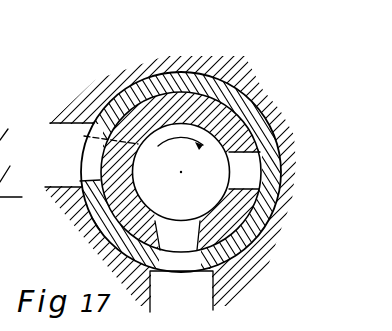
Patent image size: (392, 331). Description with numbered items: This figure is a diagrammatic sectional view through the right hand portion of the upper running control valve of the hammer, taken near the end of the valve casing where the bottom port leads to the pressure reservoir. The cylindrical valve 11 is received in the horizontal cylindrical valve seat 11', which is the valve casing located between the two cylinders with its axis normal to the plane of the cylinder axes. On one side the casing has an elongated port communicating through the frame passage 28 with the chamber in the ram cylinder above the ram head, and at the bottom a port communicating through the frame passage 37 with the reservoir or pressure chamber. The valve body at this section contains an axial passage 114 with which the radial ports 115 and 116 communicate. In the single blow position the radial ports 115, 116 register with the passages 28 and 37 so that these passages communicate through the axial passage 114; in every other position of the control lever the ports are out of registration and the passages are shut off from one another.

The cylindrical valve 11 is at (181, 172).
The cylindrical valve seat 11' is at (196, 145).
The frame passage 28 is at (78, 146).
The frame passage 37 is at (190, 279).
The axial passage 114 is at (240, 127).
The radial port 115 is at (240, 173).
The radial port 116 is at (178, 235).